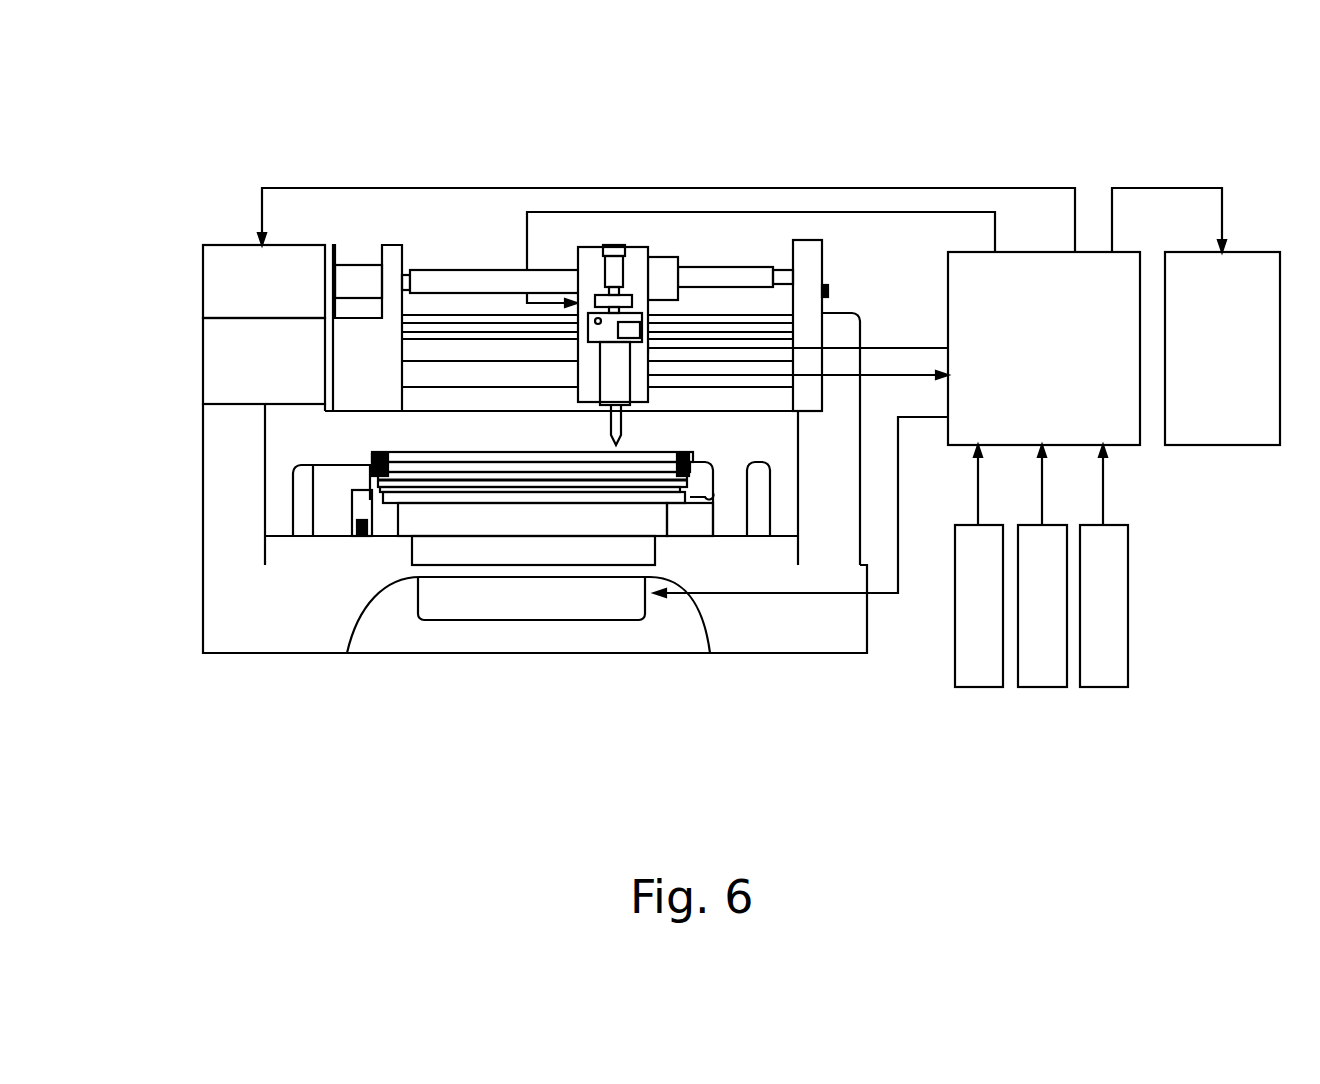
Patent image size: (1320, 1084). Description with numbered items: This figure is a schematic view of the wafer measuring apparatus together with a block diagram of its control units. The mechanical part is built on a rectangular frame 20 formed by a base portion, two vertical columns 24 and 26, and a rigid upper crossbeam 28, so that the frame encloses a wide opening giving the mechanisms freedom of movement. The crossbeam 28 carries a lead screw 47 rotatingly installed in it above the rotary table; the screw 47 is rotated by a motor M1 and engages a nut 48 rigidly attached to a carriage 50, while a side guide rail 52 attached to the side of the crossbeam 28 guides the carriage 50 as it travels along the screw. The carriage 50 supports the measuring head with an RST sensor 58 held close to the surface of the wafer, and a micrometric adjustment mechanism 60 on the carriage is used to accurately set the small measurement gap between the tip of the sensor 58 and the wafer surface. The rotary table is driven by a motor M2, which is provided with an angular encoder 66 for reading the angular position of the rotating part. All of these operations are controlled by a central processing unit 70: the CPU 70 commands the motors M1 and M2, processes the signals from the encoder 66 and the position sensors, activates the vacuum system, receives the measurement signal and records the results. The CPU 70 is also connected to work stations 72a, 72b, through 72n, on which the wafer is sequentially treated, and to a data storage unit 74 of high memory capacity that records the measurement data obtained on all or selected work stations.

The rectangular frame 20 is at (306, 678).
The vertical column 24 is at (230, 500).
The vertical column 26 is at (835, 533).
The rigid upper crossbeam 28 is at (237, 360).
The lead screw 47 is at (482, 268).
The nut 48 is at (667, 255).
The carriage 50 is at (636, 248).
The side guide rail 52 is at (437, 373).
The RST sensor 58 is at (622, 430).
The micrometric adjustment mechanism 60 is at (600, 292).
The angular encoder 66 is at (484, 600).
The central processing unit 70 is at (1113, 252).
The work station 72a is at (1110, 687).
The work station 72b is at (1043, 687).
The work station 72n is at (980, 687).
The data storage unit 74 is at (1253, 250).
The motor M1 is at (217, 243).
The motor M2 is at (541, 627).